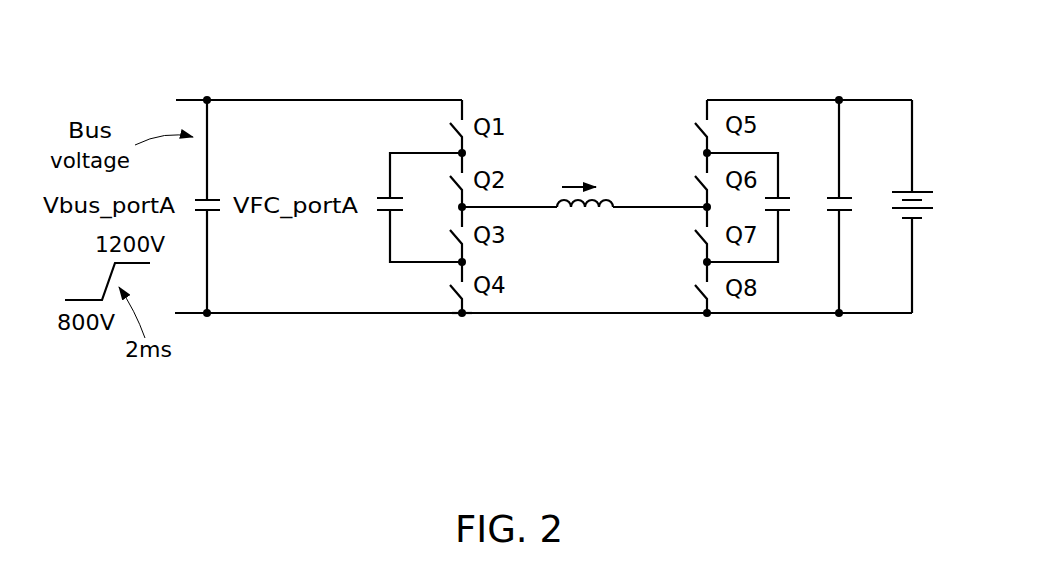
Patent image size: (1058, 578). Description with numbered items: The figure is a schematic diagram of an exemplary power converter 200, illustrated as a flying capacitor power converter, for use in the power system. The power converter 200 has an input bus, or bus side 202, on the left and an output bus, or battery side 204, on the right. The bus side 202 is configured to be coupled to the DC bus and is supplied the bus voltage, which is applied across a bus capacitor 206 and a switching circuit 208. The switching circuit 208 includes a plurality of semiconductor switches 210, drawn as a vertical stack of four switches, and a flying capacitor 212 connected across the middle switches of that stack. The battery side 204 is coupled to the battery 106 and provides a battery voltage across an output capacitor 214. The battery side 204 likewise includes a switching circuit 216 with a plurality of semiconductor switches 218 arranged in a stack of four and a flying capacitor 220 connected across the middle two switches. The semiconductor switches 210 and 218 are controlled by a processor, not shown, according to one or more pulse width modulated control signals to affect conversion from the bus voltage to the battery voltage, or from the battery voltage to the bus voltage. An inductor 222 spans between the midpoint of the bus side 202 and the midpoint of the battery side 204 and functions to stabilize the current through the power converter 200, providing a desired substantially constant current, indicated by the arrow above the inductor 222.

The power converter 200 is at (256, 63).
The bus side 202 is at (352, 385).
The battery side 204 is at (813, 399).
The bus capacitor 206 is at (218, 224).
The switching circuit 208 is at (456, 340).
The semiconductor switches 210 is at (471, 297).
The flying capacitor 212 is at (379, 186).
The output capacitor 214 is at (851, 225).
The switching circuit 216 is at (710, 322).
The semiconductor switches 218 is at (696, 134).
The flying capacitor 220 is at (789, 224).
The inductor 222 is at (580, 215).
The battery 106 is at (926, 239).